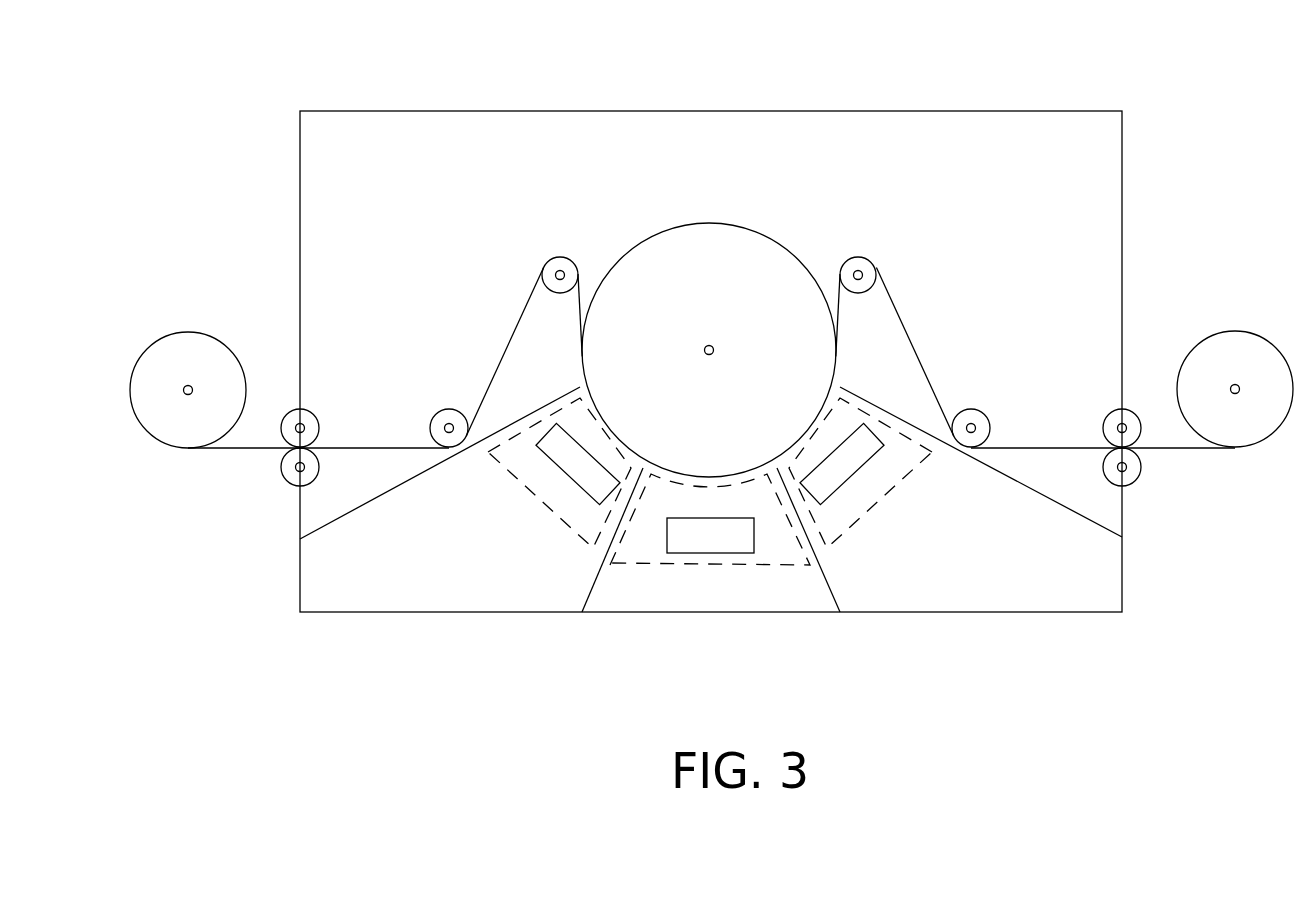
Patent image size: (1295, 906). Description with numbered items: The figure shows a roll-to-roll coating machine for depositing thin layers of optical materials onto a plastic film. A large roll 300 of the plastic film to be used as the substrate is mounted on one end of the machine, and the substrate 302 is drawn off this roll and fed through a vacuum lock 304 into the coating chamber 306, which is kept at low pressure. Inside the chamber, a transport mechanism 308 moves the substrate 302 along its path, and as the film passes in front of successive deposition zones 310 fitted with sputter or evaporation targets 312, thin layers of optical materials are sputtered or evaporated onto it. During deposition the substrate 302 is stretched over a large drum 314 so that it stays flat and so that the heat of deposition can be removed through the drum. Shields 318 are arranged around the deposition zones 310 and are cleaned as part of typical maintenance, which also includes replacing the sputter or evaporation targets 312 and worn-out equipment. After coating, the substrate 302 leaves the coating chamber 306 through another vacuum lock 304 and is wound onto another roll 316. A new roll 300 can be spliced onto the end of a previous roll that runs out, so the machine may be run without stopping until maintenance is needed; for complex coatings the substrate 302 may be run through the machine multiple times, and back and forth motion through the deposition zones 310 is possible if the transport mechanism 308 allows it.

The roll 300 is at (187, 327).
The substrate 302 is at (496, 363).
The vacuum lock 304 is at (310, 412).
The coating chamber 306 is at (410, 102).
The transport mechanism 308 is at (560, 253).
The deposition zones 310 is at (560, 527).
The sputter or evaporation targets 312 is at (549, 473).
The drum 314 is at (709, 217).
The roll 316 is at (1235, 326).
The shields 318 is at (590, 570).